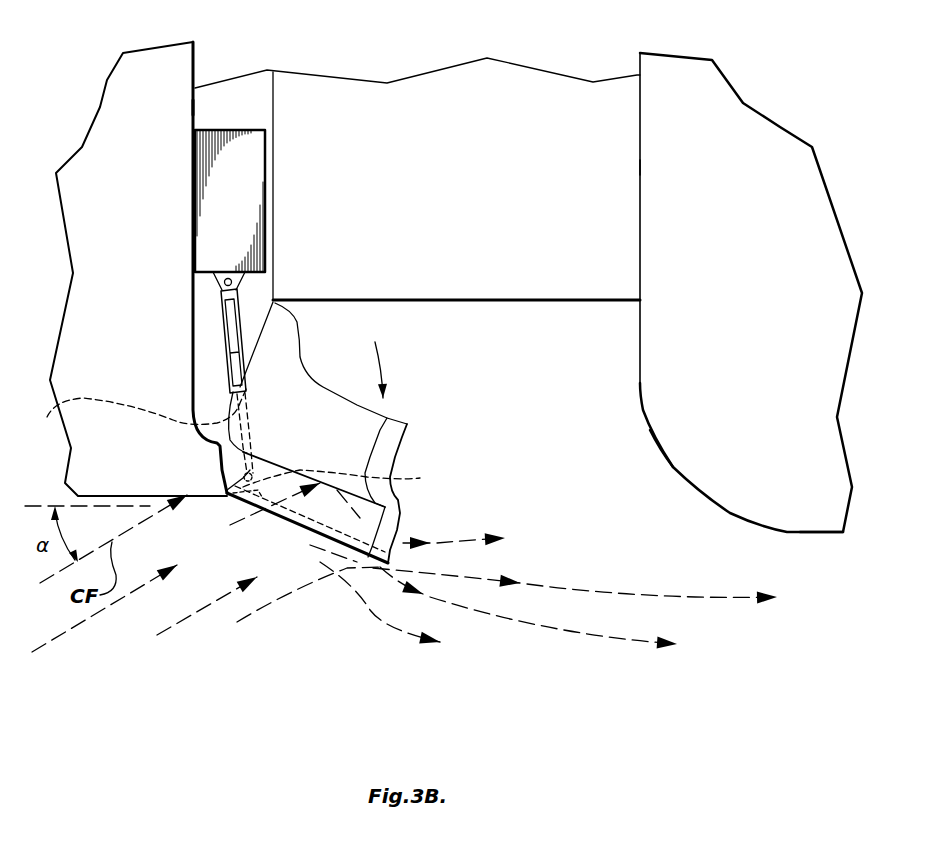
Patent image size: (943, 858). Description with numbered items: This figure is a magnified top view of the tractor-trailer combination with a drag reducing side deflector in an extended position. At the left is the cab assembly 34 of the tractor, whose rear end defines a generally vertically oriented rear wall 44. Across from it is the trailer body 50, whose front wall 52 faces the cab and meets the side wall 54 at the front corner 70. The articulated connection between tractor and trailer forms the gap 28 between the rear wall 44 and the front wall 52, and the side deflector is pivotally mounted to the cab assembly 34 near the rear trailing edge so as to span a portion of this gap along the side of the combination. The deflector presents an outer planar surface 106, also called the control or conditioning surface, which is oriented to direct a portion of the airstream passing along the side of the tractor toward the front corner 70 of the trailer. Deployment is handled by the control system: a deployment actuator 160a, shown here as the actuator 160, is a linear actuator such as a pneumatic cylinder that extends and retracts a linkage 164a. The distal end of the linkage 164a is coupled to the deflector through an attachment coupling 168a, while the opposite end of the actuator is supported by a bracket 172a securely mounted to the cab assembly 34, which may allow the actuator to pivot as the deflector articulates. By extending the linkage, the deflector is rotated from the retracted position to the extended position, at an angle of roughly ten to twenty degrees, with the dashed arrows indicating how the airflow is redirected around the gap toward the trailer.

The cab assembly 34 is at (117, 63).
The rear wall 44 is at (197, 107).
The front wall 52 is at (640, 167).
The trailer body 50 is at (780, 120).
The bracket 172a is at (215, 277).
The deployment actuator 160a is at (310, 330).
The deployment actuator 160 is at (300, 331).
The linkage 164a is at (217, 443).
The gap 28 is at (481, 337).
The front corner 70 is at (650, 443).
The side wall 54 is at (820, 533).
The outer planar surface 106 is at (373, 513).
The attachment coupling 168a is at (408, 479).